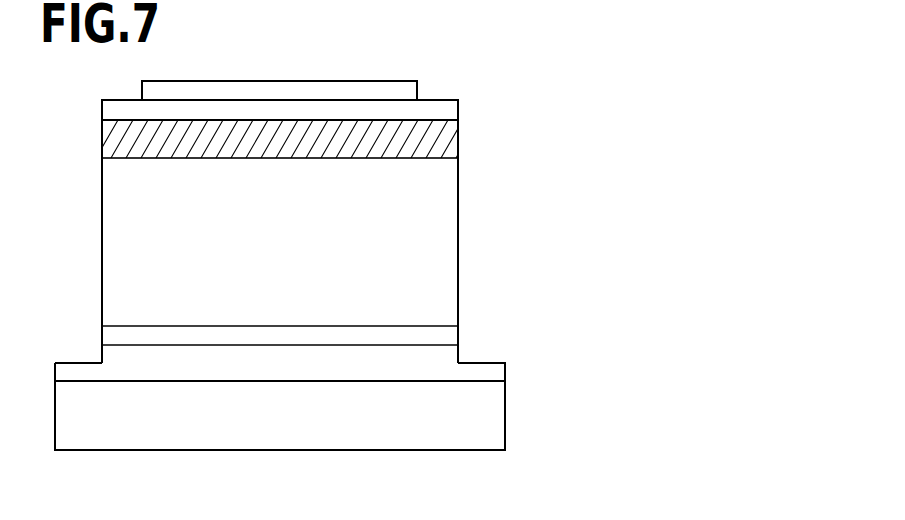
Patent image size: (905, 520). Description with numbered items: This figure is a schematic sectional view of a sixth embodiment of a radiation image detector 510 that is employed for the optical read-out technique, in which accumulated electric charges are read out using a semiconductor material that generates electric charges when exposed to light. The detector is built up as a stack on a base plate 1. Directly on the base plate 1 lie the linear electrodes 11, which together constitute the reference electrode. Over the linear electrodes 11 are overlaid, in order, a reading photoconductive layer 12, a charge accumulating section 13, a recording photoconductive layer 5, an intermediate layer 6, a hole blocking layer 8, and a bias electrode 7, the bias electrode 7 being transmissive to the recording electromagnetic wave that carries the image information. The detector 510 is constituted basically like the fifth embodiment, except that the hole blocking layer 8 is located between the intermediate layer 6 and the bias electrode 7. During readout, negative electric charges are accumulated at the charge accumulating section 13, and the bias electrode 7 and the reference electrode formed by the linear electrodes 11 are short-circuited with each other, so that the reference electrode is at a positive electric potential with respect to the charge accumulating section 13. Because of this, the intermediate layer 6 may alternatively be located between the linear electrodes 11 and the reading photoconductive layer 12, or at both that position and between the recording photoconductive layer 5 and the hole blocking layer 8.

The radiation image detector 510 is at (286, 68).
The base plate 1 is at (495, 408).
The linear electrodes 11 is at (495, 374).
The reading photoconductive layer 12 is at (443, 353).
The charge accumulating section 13 is at (443, 336).
The recording photoconductive layer 5 is at (445, 205).
The intermediate layer 6 is at (447, 138).
The hole blocking layer 8 is at (445, 110).
The bias electrode 7 is at (408, 88).